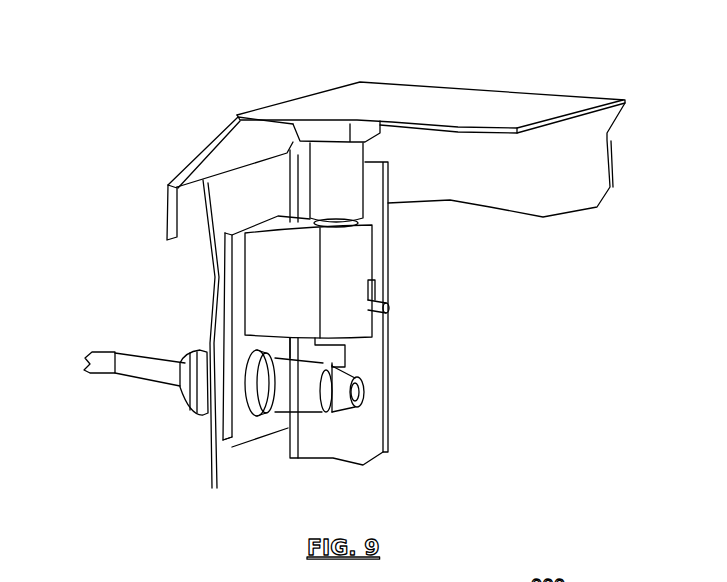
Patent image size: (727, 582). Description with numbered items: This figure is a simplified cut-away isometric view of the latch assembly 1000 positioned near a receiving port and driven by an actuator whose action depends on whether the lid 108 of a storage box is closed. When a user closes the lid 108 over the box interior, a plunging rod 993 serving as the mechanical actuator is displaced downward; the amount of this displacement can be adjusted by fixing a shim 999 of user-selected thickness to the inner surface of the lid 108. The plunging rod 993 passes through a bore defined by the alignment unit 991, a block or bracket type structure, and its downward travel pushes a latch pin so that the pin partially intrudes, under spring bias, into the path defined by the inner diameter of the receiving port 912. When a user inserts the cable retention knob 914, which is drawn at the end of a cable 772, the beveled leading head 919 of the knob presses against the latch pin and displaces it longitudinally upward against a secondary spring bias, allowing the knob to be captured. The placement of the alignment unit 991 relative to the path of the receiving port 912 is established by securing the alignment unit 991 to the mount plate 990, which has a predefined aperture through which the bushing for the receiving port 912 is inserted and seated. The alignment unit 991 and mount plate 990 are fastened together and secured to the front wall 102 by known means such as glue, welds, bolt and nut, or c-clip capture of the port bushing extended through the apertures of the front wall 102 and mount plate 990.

The lid 108 is at (548, 102).
The shim 999 is at (292, 133).
The plunging rod 993 is at (336, 185).
The front wall 102 is at (208, 300).
The alignment unit 991 is at (372, 263).
The cable 772 is at (127, 345).
The cable retention knob 914 is at (187, 397).
The mount plate 990 is at (222, 441).
The receiving port 912 is at (262, 420).
The leading head 919 is at (352, 412).
The latch assembly 1000 is at (430, 292).